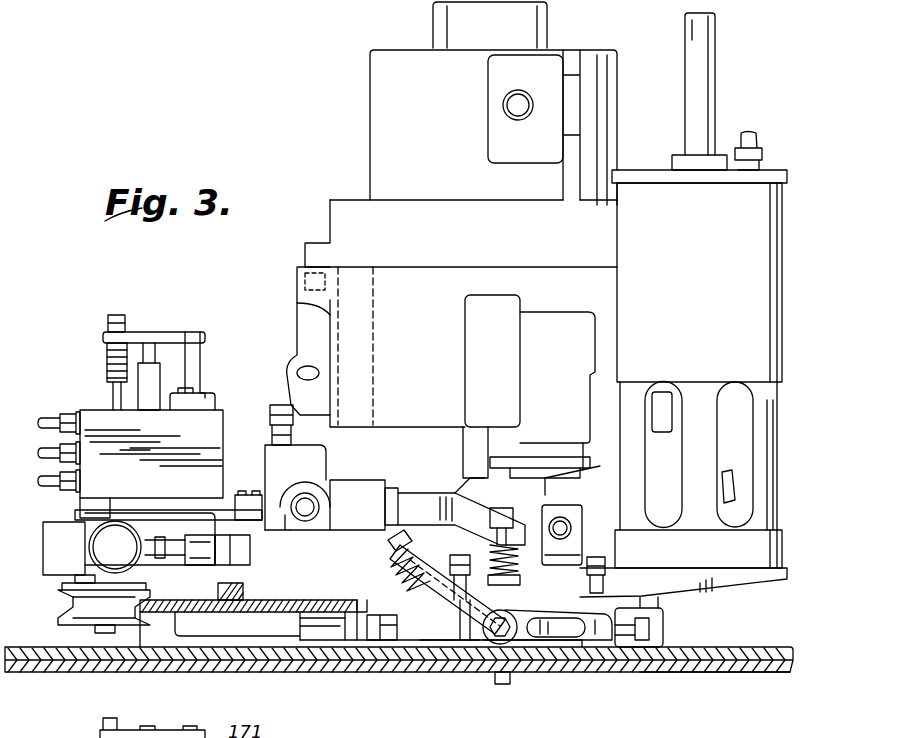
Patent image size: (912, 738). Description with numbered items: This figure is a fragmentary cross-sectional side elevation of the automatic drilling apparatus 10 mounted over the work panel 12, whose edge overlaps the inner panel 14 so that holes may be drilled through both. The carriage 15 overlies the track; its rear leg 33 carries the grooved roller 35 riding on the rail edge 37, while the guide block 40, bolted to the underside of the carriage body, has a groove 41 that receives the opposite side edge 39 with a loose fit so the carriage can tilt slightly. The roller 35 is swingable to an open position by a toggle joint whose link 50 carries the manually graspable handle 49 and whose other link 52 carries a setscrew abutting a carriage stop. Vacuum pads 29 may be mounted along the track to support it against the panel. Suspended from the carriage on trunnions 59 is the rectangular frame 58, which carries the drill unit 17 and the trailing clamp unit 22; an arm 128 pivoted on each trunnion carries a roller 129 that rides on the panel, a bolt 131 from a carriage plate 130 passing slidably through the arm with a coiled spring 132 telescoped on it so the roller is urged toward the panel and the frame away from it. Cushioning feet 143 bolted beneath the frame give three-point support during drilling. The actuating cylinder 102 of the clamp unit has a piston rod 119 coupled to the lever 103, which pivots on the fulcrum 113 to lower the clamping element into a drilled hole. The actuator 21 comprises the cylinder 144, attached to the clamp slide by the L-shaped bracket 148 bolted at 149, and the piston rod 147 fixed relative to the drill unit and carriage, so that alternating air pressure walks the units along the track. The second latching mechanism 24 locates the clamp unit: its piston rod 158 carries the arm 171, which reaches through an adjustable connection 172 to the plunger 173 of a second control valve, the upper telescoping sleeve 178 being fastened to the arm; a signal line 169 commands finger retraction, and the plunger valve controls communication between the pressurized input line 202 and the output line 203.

The drilling apparatus 10 is at (292, 56).
The work panel 12 is at (752, 648).
The inner panel 14 is at (733, 673).
The carriage 15 is at (297, 641).
The drill unit 17 is at (296, 251).
The actuator 21 is at (272, 485).
The clamp unit 22 is at (792, 548).
The second latching mechanism 24 is at (54, 380).
The vacuum pads 29 is at (245, 641).
The rear leg 33 is at (232, 521).
The roller 35 is at (68, 611).
The rail edge 37 is at (100, 627).
The opposite side edge 39 is at (358, 601).
The guide block 40 is at (388, 613).
The groove 41 is at (345, 612).
The handle 49 is at (100, 547).
The toggle link 50 is at (172, 566).
The other toggle link 52 is at (172, 531).
The frame 58 is at (607, 605).
The trunnions 59 is at (517, 644).
The actuating cylinder 102 is at (765, 247).
The lever 103 is at (584, 496).
The fulcrum 113 is at (560, 520).
The piston rod 119 is at (702, 78).
The arm 128 is at (560, 643).
The roller 129 is at (663, 614).
The plate 130 is at (414, 642).
The bolt 131 is at (421, 547).
The coiled spring 132 is at (392, 563).
The cushioning feet 143 is at (445, 641).
The cylinder 144 is at (360, 490).
The piston rod 147 is at (311, 504).
The L-shaped bracket 148 is at (442, 470).
The bolted connection 149 is at (528, 508).
The piston rod 158 is at (200, 380).
The line 169 is at (40, 453).
The arm 171 is at (206, 338).
The adjustable connection 172 is at (107, 352).
The plunger 173 is at (113, 392).
The upper telescoping sleeve 178 is at (156, 372).
The pressurized input line 202 is at (43, 484).
The output line 203 is at (42, 423).